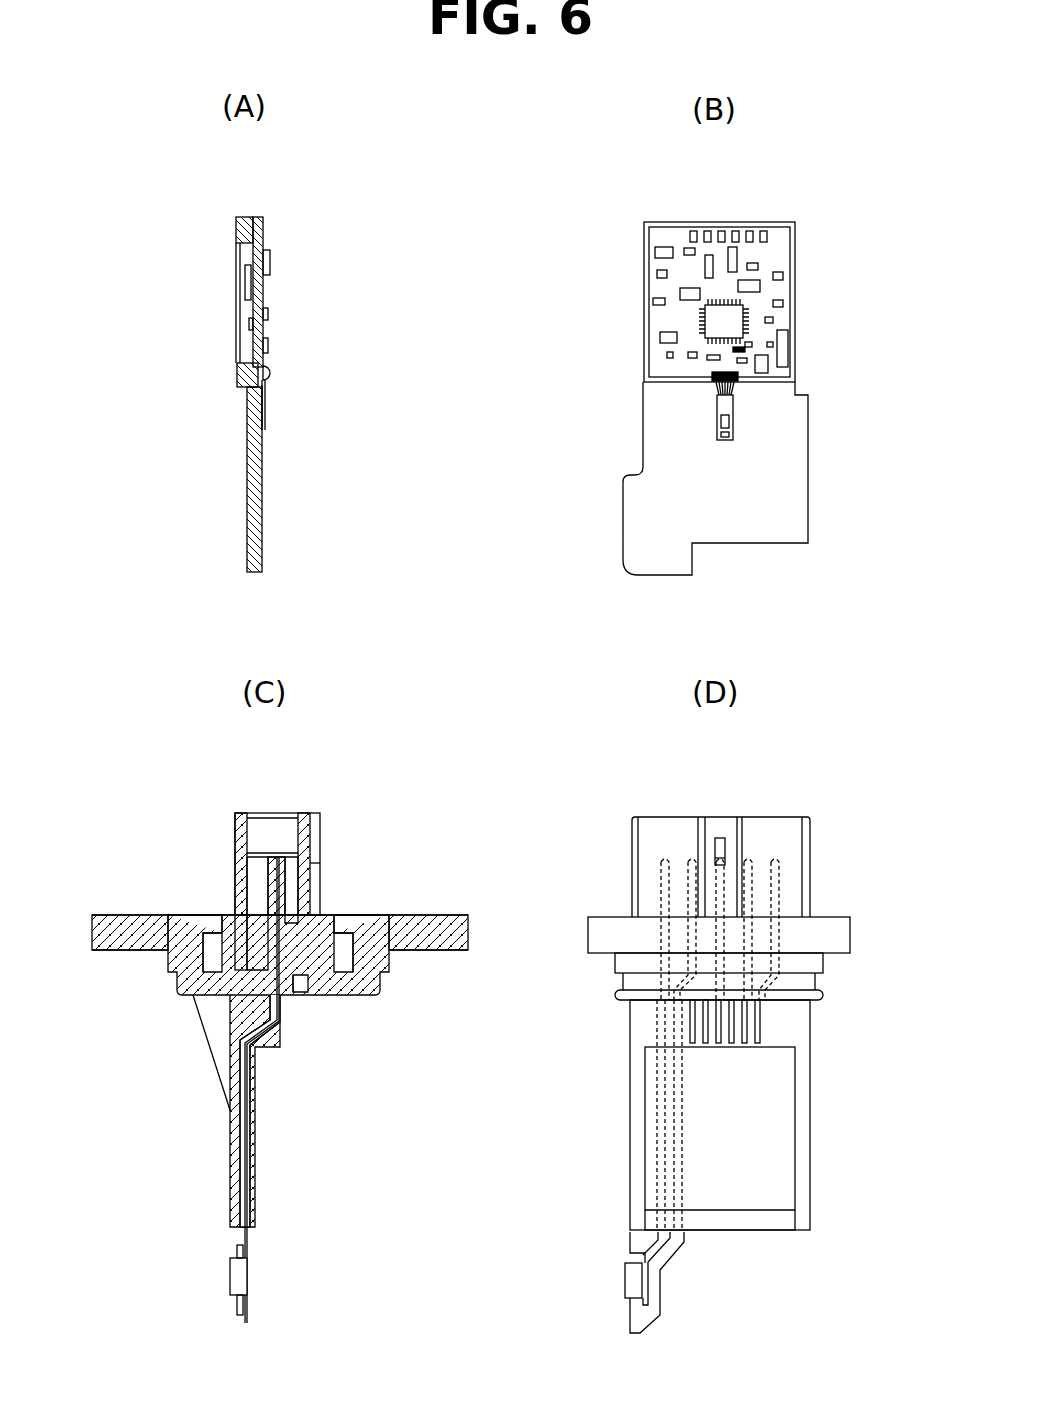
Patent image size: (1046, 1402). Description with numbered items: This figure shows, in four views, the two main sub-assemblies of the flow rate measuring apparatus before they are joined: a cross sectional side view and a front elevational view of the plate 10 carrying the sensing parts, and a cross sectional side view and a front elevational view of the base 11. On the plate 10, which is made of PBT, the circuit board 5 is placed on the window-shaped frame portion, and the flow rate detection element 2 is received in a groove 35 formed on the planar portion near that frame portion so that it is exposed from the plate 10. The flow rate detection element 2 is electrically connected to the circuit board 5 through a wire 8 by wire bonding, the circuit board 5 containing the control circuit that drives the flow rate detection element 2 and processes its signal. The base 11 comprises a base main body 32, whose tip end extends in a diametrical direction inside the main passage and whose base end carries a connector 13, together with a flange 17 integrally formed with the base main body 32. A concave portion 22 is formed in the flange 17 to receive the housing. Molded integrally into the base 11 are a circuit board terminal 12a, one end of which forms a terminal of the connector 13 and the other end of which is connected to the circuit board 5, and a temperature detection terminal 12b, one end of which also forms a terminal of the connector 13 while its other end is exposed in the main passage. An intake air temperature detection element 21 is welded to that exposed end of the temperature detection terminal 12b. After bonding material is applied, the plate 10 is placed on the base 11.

The flow rate detection element 2 is at (266, 410).
The circuit board 5 is at (262, 222).
The wire 8 is at (268, 373).
The plate 10 is at (258, 500).
The base 11 is at (365, 995).
The circuit board terminal 12a is at (776, 855).
The temperature detection terminal 12b is at (250, 1180).
The connector 13 is at (235, 845).
The flange 17 is at (425, 915).
The intake air temperature detection element 21 is at (235, 1278).
The concave portion 22 is at (300, 985).
The base main body 32 is at (232, 1148).
The groove 35 is at (263, 430).